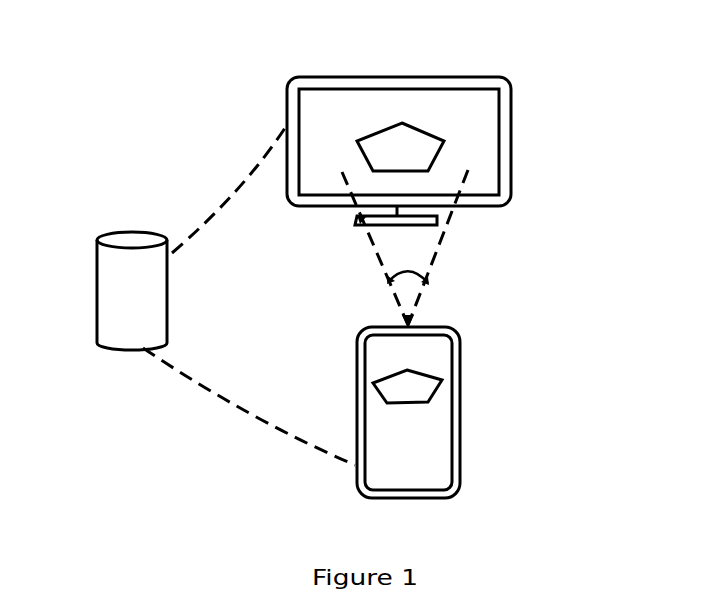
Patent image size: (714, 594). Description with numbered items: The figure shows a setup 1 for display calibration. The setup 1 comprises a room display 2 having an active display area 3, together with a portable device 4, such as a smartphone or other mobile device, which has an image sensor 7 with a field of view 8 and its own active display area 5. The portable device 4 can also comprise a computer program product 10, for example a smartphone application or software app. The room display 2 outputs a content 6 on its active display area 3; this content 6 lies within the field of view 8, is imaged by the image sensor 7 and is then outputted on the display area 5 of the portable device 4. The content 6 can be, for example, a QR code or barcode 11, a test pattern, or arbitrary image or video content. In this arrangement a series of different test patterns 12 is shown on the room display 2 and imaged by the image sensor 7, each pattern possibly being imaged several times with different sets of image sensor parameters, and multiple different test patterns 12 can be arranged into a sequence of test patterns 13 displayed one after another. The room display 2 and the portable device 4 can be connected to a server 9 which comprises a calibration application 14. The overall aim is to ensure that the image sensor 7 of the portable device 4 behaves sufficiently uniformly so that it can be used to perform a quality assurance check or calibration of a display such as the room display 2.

The setup 1 is at (150, 92).
The room display 2 is at (321, 75).
The active display area 3 is at (430, 100).
The portable device 4 is at (445, 415).
The active display area 5 is at (440, 415).
The content 6 is at (512, 259).
The image sensor 7 is at (410, 326).
The field of view 8 is at (397, 276).
The server 9 is at (97, 291).
The computer program product 10 is at (460, 490).
The QR code or barcode 11 is at (512, 259).
The test pattern 12 is at (512, 259).
The sequence of test patterns 13 is at (433, 137).
The calibration application 14 is at (97, 255).